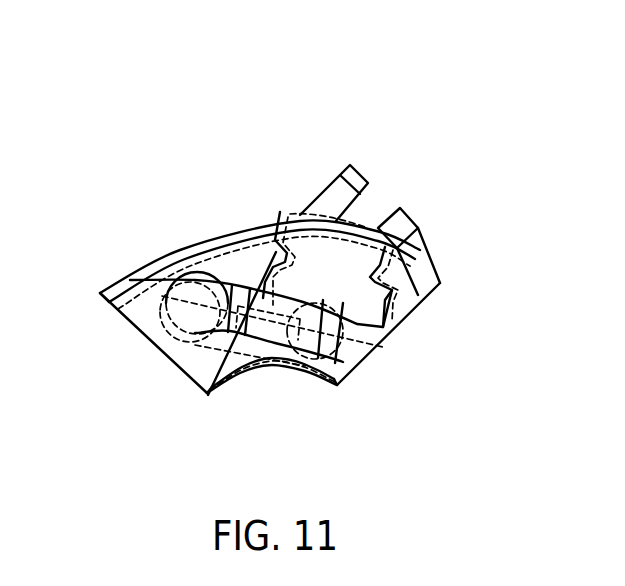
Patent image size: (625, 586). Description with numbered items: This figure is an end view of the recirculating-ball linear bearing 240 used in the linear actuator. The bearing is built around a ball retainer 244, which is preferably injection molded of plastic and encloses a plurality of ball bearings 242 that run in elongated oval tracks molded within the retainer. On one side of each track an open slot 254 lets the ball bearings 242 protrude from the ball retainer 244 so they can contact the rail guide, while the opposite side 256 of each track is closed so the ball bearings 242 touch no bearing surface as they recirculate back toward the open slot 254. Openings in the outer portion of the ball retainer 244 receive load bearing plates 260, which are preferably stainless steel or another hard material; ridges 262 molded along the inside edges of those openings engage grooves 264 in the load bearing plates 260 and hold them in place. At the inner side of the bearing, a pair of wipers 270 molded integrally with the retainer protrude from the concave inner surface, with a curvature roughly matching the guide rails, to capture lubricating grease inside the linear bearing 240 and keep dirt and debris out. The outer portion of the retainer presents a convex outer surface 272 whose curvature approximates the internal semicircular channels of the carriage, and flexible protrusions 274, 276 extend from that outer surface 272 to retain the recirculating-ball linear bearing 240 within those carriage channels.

The recirculating-ball linear bearing 240 is at (375, 80).
The ball bearings 242 is at (165, 294).
The ball retainer 244 is at (198, 261).
The open slot 254 is at (303, 373).
The closed opposite side 256 is at (170, 332).
The load bearing plates 260 is at (348, 273).
The ridges 262 is at (263, 253).
The grooves 264 is at (347, 272).
The wipers 270 is at (248, 378).
The convex outer surface 272 is at (203, 229).
The flexible protrusion 274 is at (363, 158).
The flexible protrusion 276 is at (420, 243).